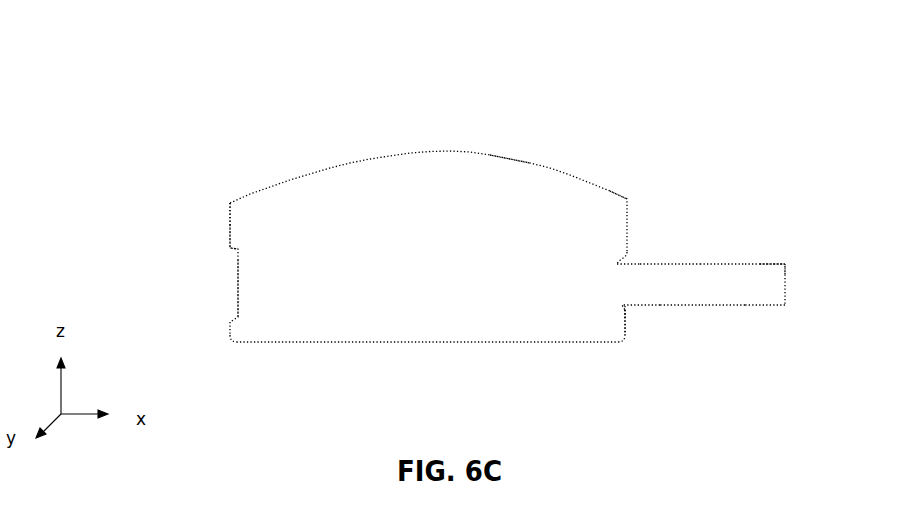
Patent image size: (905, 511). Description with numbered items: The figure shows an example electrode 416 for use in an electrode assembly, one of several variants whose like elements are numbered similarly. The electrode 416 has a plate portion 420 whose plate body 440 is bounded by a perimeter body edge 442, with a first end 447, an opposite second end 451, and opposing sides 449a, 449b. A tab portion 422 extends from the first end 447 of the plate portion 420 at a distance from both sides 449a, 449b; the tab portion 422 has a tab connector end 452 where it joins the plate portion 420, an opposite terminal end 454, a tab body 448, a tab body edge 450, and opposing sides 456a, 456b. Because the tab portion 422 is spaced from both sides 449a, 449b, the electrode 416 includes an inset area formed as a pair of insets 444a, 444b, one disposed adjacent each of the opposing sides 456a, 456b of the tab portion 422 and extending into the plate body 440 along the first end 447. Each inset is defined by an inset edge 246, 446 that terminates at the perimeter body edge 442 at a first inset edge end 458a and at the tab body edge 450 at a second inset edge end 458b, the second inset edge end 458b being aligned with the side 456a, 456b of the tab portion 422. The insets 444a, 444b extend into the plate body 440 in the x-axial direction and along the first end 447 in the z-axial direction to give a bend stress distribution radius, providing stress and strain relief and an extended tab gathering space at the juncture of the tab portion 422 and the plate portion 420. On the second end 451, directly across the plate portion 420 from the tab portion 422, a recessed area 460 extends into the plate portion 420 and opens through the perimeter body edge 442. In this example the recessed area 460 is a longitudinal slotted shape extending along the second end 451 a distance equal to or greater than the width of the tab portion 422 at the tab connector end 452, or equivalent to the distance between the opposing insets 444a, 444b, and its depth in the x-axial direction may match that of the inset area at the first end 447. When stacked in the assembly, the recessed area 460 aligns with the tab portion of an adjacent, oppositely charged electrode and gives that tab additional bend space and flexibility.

The electrode 416 is at (90, 66).
The plate portion 420 is at (380, 177).
The plate body 440 is at (430, 176).
The perimeter body edge 442 is at (228, 205).
The first side of plate portion 449a is at (295, 344).
The second side of plate portion 449b is at (515, 158).
The first end of plate portion 447 is at (628, 200).
The first inset 444a is at (623, 308).
The second inset 444b is at (623, 258).
The inset edge 446 is at (628, 318).
The second end of plate portion 451 is at (230, 229).
The first inset edge end 458a is at (612, 265).
The second inset edge end 458b is at (626, 249).
The inset edge 246 is at (622, 262).
The first side of tab portion 456a is at (714, 264).
The second side of tab portion 456b is at (763, 305).
The recessed area 460 is at (237, 294).
The tab portion 422 is at (758, 257).
The tab body 448 is at (768, 275).
The terminal end of tab portion 454 is at (786, 270).
The tab body edge 450 is at (728, 305).
The tab connector end 452 is at (623, 286).